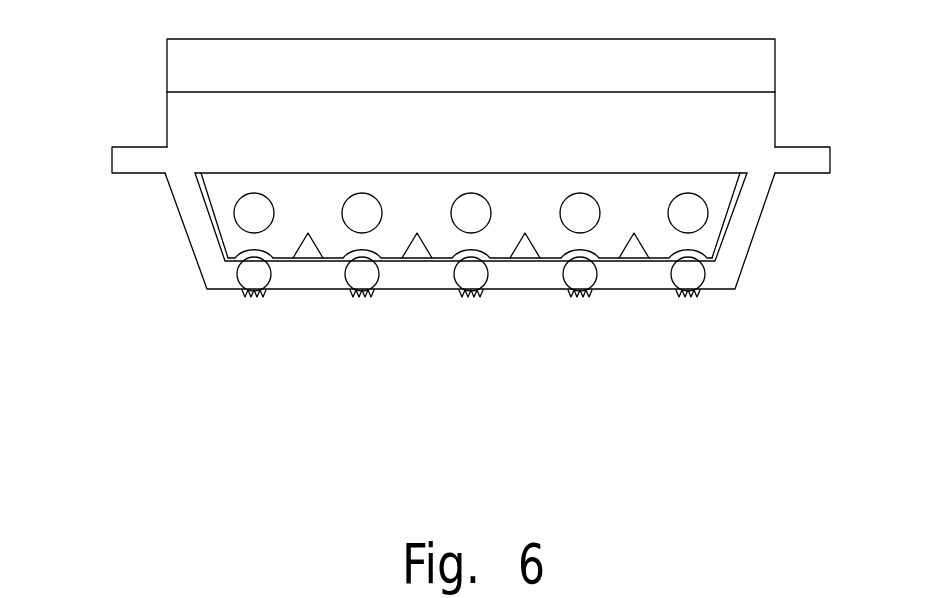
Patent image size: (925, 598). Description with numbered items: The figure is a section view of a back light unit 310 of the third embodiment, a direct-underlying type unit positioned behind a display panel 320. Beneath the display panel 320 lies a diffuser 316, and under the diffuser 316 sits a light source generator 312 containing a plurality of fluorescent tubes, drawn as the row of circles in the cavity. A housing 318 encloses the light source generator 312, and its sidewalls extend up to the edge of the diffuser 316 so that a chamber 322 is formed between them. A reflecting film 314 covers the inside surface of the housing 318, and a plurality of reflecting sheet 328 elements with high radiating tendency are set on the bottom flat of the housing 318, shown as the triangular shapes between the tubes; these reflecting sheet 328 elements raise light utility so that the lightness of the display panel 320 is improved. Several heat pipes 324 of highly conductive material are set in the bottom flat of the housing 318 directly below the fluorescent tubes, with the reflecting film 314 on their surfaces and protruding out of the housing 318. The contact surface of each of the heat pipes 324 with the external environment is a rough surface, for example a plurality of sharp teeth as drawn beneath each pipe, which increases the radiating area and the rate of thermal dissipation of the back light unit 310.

The back light unit 310 is at (93, 91).
The light source generator 312 is at (723, 227).
The reflecting film 314 is at (732, 210).
The diffuser 316 is at (753, 117).
The housing 318 is at (758, 182).
The display panel 320 is at (753, 63).
The chamber 322 is at (227, 198).
The heat pipes 324 is at (687, 278).
The reflecting sheet 328 is at (318, 258).